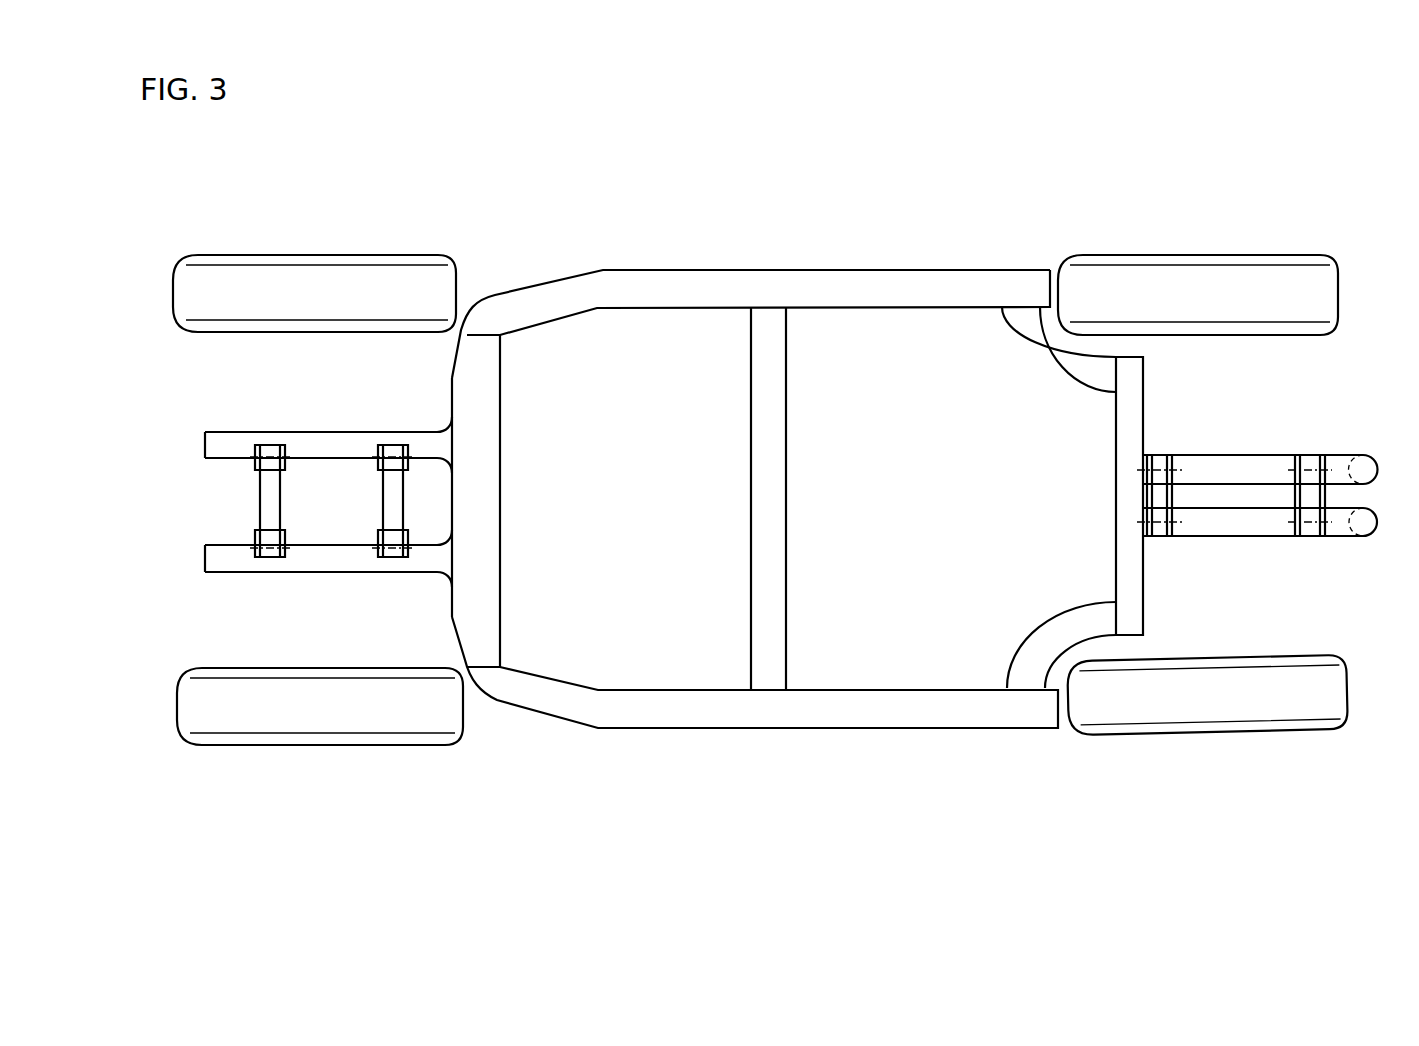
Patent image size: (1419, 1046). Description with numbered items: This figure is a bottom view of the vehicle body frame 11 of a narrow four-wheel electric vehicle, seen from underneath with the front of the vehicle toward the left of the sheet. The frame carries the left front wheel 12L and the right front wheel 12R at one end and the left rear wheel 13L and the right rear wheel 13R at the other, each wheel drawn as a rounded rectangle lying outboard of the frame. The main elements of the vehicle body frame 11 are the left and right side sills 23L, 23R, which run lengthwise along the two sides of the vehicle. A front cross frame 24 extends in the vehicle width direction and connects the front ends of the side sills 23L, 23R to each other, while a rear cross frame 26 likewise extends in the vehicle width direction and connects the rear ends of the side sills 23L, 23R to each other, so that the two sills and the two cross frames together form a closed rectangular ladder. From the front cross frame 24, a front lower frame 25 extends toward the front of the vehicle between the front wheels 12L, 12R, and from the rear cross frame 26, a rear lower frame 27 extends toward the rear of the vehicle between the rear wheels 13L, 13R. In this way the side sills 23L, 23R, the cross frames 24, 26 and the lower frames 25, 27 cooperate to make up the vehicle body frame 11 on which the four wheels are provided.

The vehicle body frame 11 is at (622, 743).
The front wheel 12L is at (314, 292).
The front wheel 12R is at (323, 720).
The rear wheel 13L is at (1196, 292).
The rear wheel 13R is at (1198, 715).
The side sill 23L is at (794, 290).
The side sill 23R is at (800, 708).
The front cross frame 24 is at (487, 503).
The front lower frame 25 is at (328, 560).
The rear cross frame 26 is at (1132, 492).
The rear lower frame 27 is at (1256, 538).